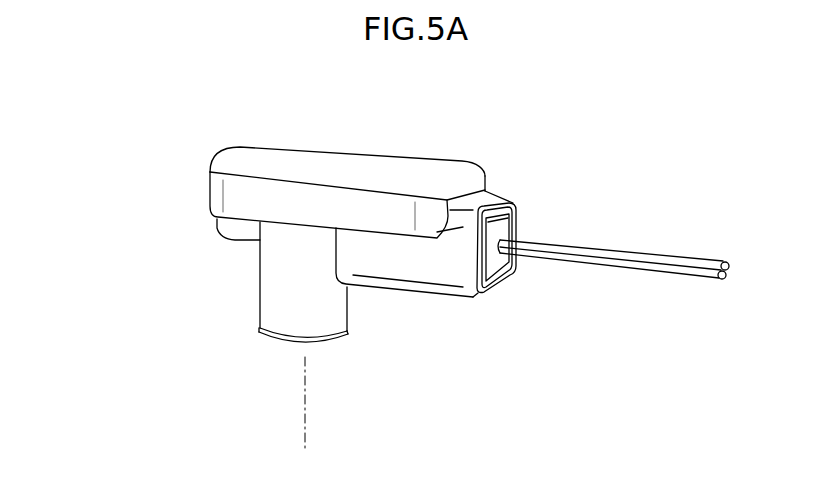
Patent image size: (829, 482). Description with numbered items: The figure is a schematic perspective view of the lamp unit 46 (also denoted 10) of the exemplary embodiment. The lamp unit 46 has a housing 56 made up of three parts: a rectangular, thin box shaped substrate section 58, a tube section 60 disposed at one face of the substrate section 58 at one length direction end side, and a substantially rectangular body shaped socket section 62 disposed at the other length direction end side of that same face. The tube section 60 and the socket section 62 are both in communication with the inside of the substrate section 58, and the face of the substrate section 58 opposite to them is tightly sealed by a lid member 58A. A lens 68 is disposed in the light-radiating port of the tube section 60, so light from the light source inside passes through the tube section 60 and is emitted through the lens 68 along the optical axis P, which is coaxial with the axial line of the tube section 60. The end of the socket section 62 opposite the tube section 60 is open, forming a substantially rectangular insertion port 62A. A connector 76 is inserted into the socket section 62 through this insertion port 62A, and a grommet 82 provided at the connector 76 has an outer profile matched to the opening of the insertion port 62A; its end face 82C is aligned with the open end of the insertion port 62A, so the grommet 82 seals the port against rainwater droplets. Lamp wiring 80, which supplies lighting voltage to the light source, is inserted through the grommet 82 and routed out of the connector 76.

The lamp unit 46 is at (399, 236).
The sensor 10 is at (523, 165).
The housing 56 is at (120, 214).
The substrate section 58 is at (211, 200).
The lid member 58A is at (323, 166).
The tube section 60 is at (267, 274).
The socket section 62 is at (353, 253).
The insertion port 62A is at (486, 300).
The lens 68 is at (348, 329).
The grommet 82 is at (571, 260).
The connector 76 is at (522, 218).
The end face 82C is at (498, 268).
The lamp wiring 80 is at (647, 258).
The optical axis P is at (305, 409).